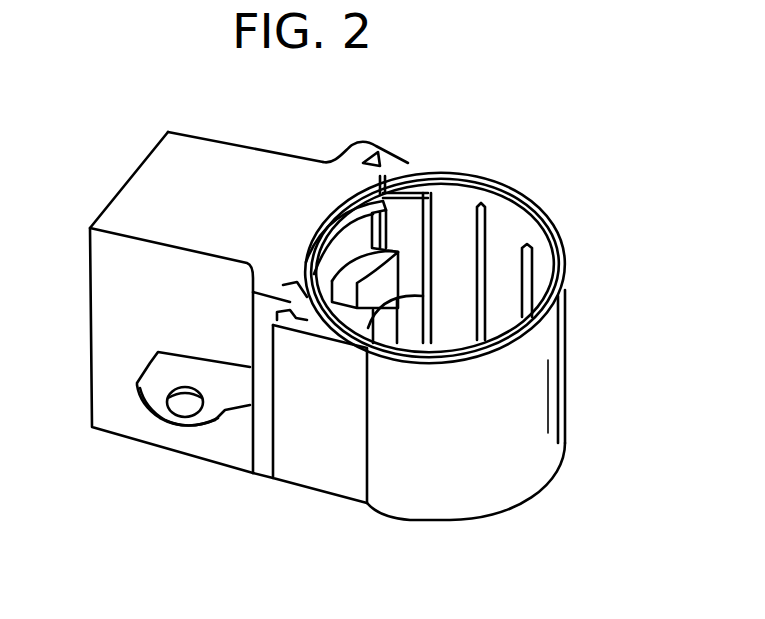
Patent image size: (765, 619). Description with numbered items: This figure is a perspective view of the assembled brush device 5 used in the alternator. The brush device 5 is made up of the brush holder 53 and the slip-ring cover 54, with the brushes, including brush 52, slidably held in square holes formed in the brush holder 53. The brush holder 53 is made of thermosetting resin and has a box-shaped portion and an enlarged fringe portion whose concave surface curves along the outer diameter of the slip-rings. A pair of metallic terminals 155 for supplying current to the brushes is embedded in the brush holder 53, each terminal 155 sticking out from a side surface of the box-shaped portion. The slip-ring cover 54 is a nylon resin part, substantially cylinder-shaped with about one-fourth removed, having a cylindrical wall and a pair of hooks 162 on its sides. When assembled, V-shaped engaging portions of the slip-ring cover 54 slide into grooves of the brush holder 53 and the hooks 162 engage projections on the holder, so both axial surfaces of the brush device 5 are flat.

The brush device 5 is at (496, 154).
The brush 52 is at (386, 288).
The brush holder 53 is at (167, 162).
The slip-ring cover 54 is at (556, 369).
The metallic terminal 155 is at (188, 422).
The hook 162 is at (323, 470).